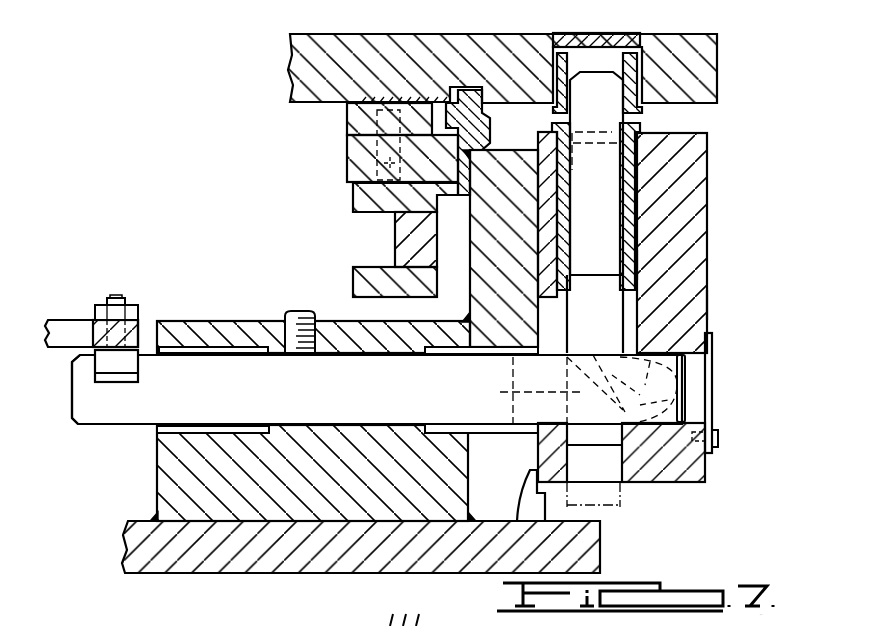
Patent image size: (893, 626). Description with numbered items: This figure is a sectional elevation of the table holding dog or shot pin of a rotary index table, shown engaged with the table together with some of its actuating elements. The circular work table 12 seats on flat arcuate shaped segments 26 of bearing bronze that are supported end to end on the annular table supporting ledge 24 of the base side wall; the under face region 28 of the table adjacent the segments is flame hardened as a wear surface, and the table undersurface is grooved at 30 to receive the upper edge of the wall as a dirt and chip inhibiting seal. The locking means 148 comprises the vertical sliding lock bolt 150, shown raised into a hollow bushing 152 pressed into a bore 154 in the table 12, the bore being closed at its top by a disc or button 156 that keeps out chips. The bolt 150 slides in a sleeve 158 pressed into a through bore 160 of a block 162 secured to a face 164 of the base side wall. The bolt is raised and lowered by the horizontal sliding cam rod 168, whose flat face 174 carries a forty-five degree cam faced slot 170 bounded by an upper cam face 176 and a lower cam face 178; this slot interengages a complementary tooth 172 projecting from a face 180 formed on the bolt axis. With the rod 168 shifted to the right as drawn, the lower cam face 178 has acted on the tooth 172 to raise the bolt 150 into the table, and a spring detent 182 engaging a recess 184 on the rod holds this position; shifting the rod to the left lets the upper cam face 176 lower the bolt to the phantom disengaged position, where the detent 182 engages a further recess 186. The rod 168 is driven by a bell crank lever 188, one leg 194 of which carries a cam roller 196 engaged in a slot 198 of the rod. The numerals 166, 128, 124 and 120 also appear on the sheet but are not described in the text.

The circular work table 12 is at (710, 100).
The under face region of the table 28 is at (368, 97).
The table supporting ledge 24 is at (363, 152).
The arcuate shaped segments 26 is at (353, 118).
The groove 30 is at (475, 87).
The locking means 148 is at (756, 262).
The lock bolt 150 is at (617, 187).
The hollow bushing 152 is at (633, 75).
The bore 154 is at (640, 55).
The disc or button 156 is at (642, 32).
The sleeve 158 is at (640, 213).
The through bore 160 is at (610, 290).
The block 162 is at (693, 148).
The face of side wall portion 164 is at (361, 547).
The pedestal 166 is at (470, 475).
The horizontal sliding bar or cam rod 168 is at (388, 398).
The cam faced slot 170 is at (703, 377).
The tooth 172 is at (708, 302).
The flat face 174 is at (540, 390).
The upper cam face 176 is at (728, 345).
The lower cam face 178 is at (693, 398).
The face of the bolt 180 is at (635, 268).
The spring detent 182 is at (298, 315).
The recess 184 is at (313, 362).
The further recess 186 is at (356, 357).
The bell crank lever 188 is at (65, 327).
The leg of the crank 194 is at (138, 330).
The cam roller 196 is at (113, 362).
The slot 198 is at (122, 372).
The slide bar end 128 is at (68, 397).
The frame member 124 is at (227, 611).
The frame base 120 is at (343, 609).